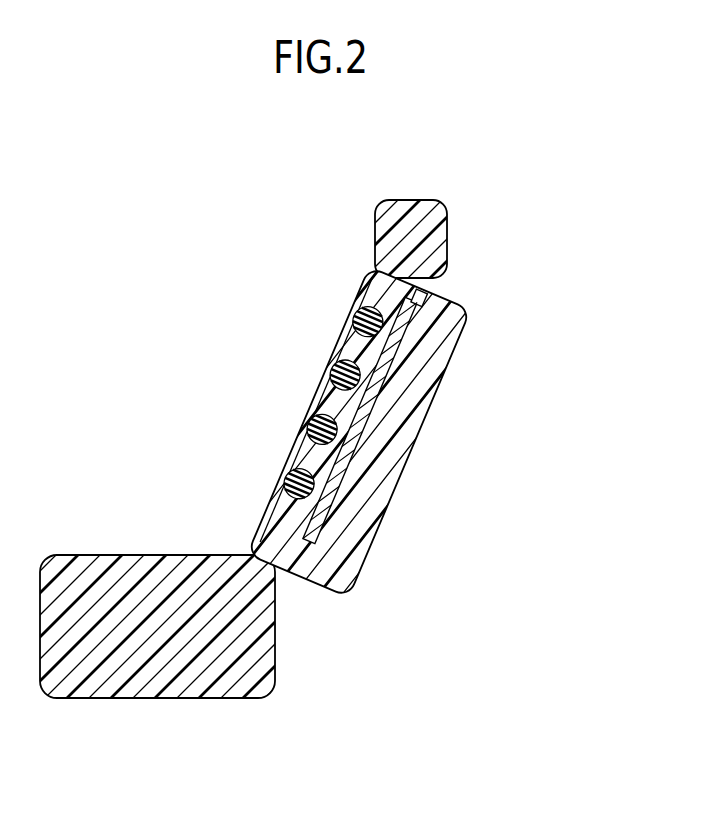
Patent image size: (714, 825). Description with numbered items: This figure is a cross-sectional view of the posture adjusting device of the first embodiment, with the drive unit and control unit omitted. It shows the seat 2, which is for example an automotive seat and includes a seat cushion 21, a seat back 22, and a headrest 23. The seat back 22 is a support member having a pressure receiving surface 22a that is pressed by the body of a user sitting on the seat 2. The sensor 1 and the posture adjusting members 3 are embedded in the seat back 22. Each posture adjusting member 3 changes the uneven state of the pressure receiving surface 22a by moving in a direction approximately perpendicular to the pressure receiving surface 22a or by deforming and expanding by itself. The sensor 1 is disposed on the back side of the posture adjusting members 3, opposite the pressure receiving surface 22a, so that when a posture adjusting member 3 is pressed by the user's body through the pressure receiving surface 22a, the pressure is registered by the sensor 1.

The sensor 1 is at (392, 298).
The seat 2 is at (371, 363).
The posture adjusting member 3 is at (330, 370).
The seat cushion 21 is at (253, 647).
The seat back 22 is at (386, 458).
The pressure receiving surface 22a is at (302, 425).
The headrest 23 is at (432, 240).